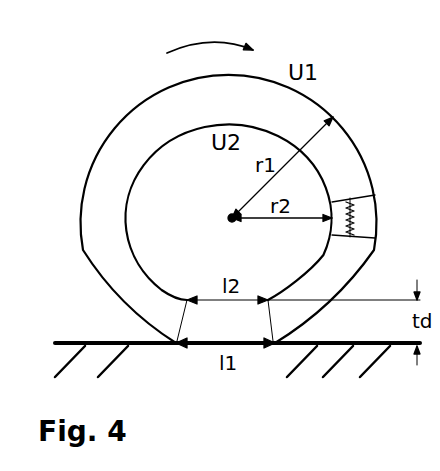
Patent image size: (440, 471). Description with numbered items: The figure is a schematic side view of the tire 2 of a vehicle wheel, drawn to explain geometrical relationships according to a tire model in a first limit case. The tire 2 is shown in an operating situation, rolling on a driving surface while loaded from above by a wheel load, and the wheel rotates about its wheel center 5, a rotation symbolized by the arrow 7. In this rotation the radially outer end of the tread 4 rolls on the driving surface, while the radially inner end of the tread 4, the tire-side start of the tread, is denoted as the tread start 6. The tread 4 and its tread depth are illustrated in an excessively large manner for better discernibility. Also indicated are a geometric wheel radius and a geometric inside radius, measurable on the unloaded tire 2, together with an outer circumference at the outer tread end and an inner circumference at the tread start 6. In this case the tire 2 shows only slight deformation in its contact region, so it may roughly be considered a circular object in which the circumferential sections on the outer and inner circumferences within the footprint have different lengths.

The tire 2 is at (122, 88).
The tread 4 is at (108, 242).
The wheel center 5 is at (228, 220).
The tread start 6 is at (137, 262).
The arrow 7 is at (210, 36).